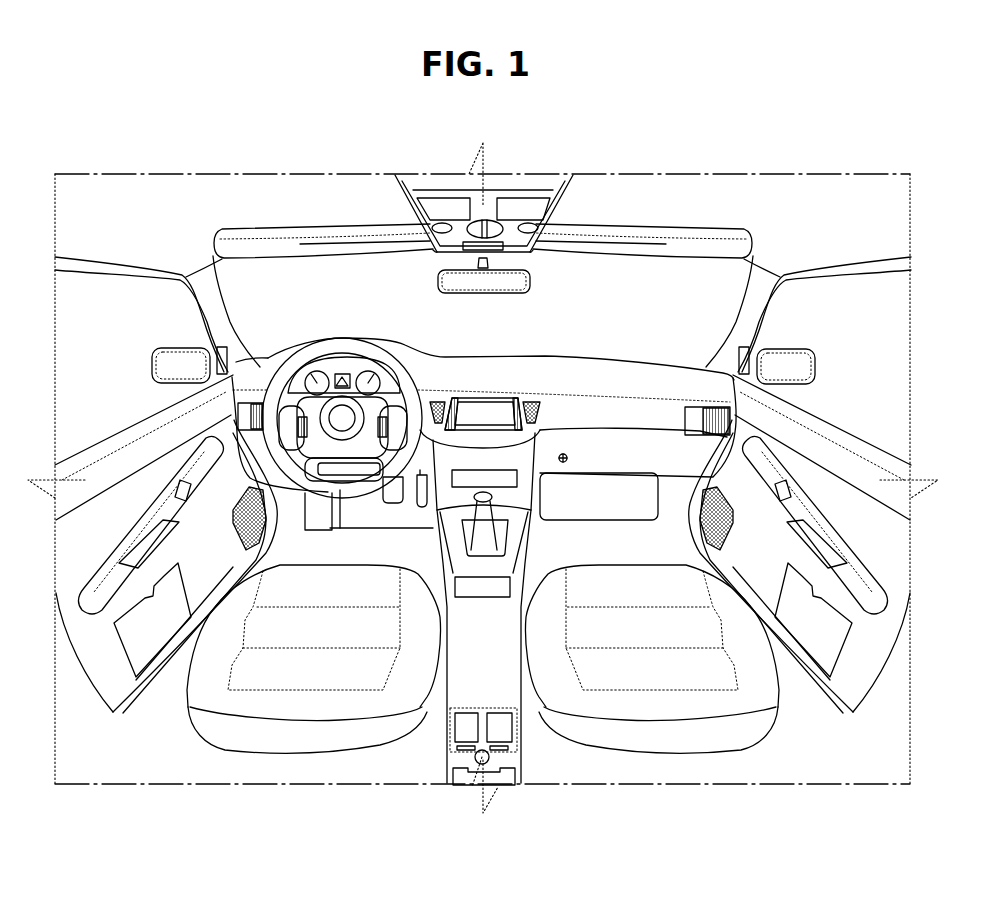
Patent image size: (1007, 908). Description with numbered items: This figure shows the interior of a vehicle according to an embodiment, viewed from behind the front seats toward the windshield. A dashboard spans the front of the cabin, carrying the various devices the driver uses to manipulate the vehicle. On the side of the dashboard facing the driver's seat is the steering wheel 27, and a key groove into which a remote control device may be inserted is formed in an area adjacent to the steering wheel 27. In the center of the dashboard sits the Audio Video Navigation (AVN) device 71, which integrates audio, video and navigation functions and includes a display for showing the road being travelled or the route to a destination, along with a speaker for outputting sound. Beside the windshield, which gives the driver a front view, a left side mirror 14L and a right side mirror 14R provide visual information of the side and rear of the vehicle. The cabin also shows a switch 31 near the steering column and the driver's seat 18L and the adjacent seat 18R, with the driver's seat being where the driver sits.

The steering wheel 27 is at (313, 352).
The Audio Video Navigation (AVN) device 71 is at (486, 410).
The left side mirror 14L is at (163, 360).
The right side mirror 14R is at (797, 360).
The operation switch 31 is at (420, 498).
The driver seat 18L is at (293, 738).
The passenger seat 18R is at (640, 738).